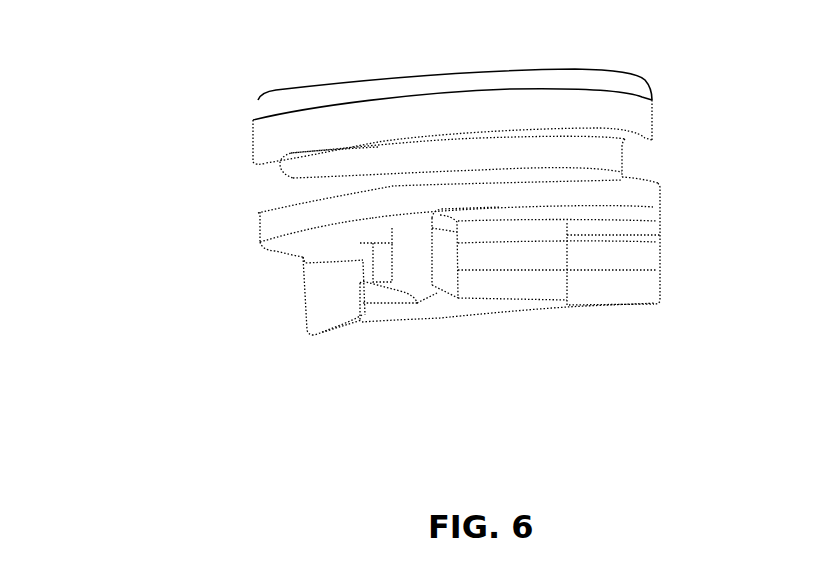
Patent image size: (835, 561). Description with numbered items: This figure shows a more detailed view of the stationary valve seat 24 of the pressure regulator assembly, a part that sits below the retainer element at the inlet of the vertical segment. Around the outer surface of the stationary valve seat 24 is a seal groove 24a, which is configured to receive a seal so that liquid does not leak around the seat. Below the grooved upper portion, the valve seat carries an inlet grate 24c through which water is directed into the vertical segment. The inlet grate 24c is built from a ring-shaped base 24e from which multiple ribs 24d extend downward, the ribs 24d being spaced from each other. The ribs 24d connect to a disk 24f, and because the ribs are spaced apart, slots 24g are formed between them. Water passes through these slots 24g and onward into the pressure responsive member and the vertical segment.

The stationary valve seat 24 is at (638, 82).
The seal groove 24a is at (618, 158).
The inlet grate 24c is at (672, 232).
The ribs 24d is at (588, 268).
The ring-shaped base 24e is at (272, 222).
The disk 24f is at (450, 312).
The slots 24g is at (483, 260).